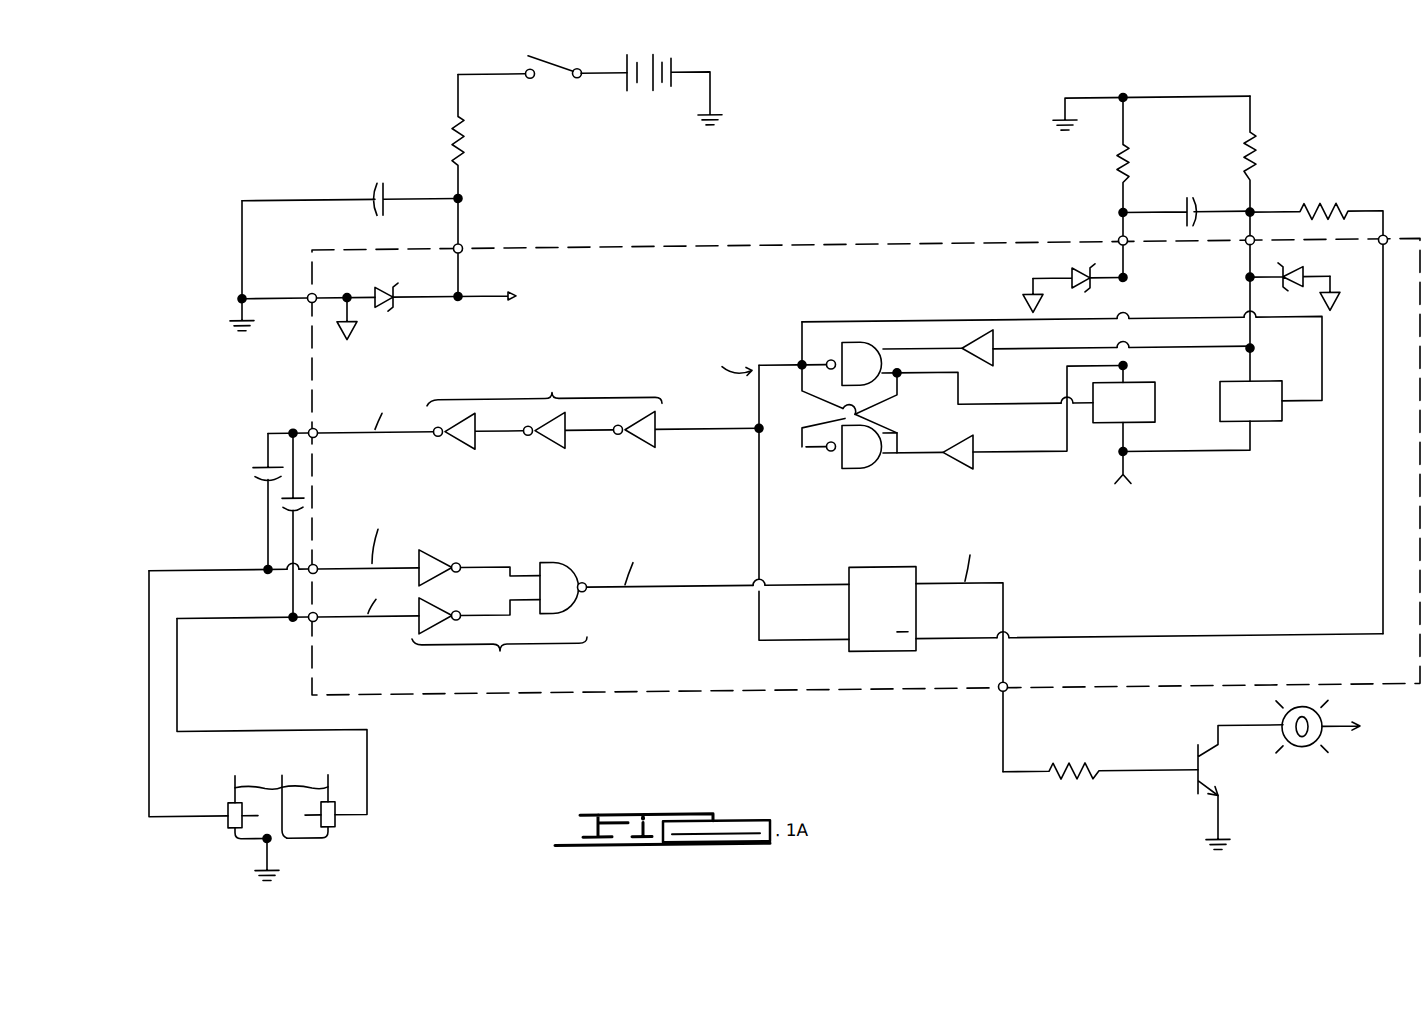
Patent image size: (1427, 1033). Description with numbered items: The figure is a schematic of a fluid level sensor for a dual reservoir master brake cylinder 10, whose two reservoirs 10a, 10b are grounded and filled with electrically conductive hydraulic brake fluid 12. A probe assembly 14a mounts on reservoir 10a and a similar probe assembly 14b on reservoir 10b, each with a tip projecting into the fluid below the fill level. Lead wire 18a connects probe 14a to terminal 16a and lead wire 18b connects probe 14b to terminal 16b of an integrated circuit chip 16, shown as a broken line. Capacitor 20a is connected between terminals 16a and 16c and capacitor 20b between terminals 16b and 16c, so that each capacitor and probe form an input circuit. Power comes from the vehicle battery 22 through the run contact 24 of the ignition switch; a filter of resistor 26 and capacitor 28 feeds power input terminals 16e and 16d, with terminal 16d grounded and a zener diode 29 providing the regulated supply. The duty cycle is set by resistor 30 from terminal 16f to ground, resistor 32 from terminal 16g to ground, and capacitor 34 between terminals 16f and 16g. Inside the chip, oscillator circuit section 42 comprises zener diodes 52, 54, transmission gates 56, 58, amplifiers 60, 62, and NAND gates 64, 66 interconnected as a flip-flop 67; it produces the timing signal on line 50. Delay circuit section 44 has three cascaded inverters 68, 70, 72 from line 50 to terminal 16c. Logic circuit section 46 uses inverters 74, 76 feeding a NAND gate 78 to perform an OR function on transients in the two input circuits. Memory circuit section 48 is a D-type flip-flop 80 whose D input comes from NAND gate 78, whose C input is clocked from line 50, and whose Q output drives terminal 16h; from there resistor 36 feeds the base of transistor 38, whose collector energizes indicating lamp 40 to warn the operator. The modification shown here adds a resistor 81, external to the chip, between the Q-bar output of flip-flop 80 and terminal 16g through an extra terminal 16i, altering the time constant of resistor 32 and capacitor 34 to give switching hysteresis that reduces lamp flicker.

The dual reservoir master brake cylinder 10 is at (271, 828).
The reservoir 10a is at (240, 842).
The reservoir 10b is at (318, 846).
The hydraulic brake fluid 12 is at (295, 790).
The probe assembly 14a is at (217, 834).
The probe assembly 14b is at (342, 829).
The integrated circuit chip 16 is at (582, 247).
The terminal 16a is at (318, 566).
The terminal 16b is at (318, 621).
The terminal 16c is at (319, 430).
The power input terminal 16d is at (310, 296).
The power input terminal 16e is at (463, 246).
The terminal 16f is at (1118, 246).
The terminal 16g is at (1245, 254).
The terminal 16h is at (998, 700).
The terminal 16i is at (1388, 248).
The lead wire 18a is at (148, 688).
The lead wire 18b is at (178, 680).
The capacitor 20a is at (250, 471).
The capacitor 20b is at (282, 503).
The vehicle battery 22 is at (628, 98).
The run contact of ignition switch 24 is at (552, 80).
The resistor 26 is at (462, 145).
The capacitor 28 is at (383, 182).
The zener diode 29 is at (386, 320).
The resistor 30 is at (1118, 188).
The resistor 32 is at (1258, 165).
The capacitor 34 is at (1190, 206).
The resistor 36 is at (1072, 778).
The transistor 38 is at (1212, 777).
The indicating lamp 40 is at (1301, 758).
The oscillator circuit section 42 is at (772, 327).
The delay circuit section 44 is at (579, 390).
The logic circuit section 46 is at (485, 668).
The memory circuit section 48 is at (898, 564).
The line 50 is at (760, 368).
The zener diode 52 is at (1062, 282).
The zener diode 54 is at (1305, 284).
The transmission gate 56 is at (1106, 432).
The transmission gate 58 is at (1284, 432).
The amplifier 60 is at (972, 337).
The amplifier 62 is at (975, 475).
The NAND gate 64 is at (868, 348).
The NAND gate 66 is at (840, 475).
The flip-flop 67 is at (904, 422).
The inverter 68 is at (645, 450).
The inverter 70 is at (554, 450).
The inverter 72 is at (456, 450).
The inverter 74 is at (430, 550).
The inverter 76 is at (440, 612).
The NAND gate 78 is at (560, 565).
The D-type flip-flop 80 is at (853, 658).
The resistor 81 is at (1322, 218).